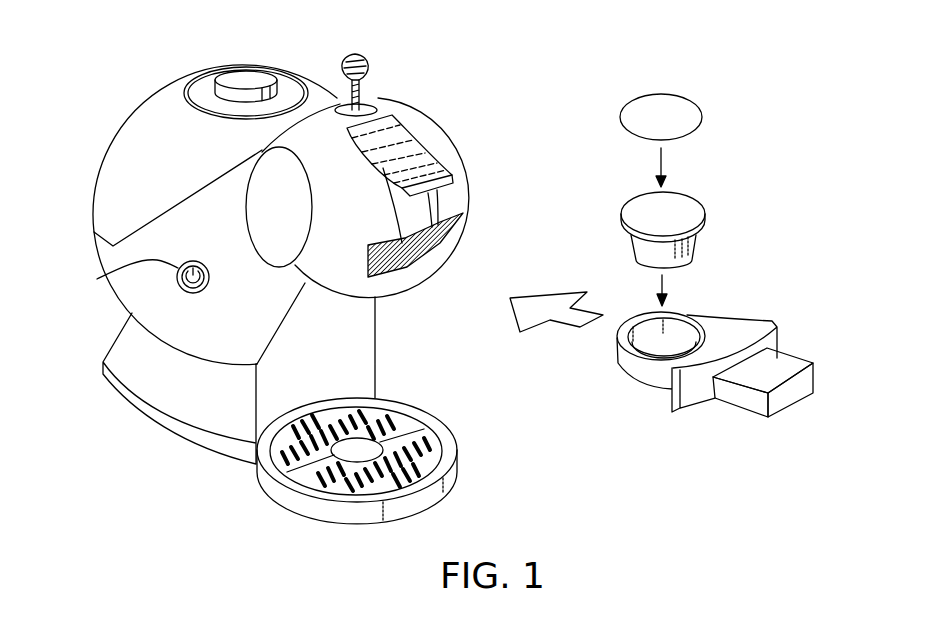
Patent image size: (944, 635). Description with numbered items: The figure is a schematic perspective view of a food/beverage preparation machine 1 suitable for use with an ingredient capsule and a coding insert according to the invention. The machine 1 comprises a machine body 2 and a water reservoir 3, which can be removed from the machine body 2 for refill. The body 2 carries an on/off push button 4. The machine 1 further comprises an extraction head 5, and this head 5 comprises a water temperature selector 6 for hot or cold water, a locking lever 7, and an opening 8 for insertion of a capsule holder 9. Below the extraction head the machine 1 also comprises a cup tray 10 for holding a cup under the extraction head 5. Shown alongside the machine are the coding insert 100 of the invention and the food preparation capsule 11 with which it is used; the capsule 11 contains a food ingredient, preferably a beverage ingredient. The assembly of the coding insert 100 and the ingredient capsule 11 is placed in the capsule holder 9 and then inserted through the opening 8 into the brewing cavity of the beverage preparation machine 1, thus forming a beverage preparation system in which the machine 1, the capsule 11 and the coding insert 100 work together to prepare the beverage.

The beverage preparation machine 1 is at (426, 95).
The machine body 2 is at (133, 292).
The water reservoir 3 is at (113, 162).
The on/off push button 4 is at (97, 279).
The extraction head 5 is at (463, 199).
The water temperature selector 6 is at (349, 54).
The locking lever 7 is at (412, 150).
The opening 8 is at (461, 231).
The capsule holder 9 is at (788, 362).
The cup tray 10 is at (294, 502).
The food preparation capsule 11 is at (673, 206).
The coding insert 100 is at (687, 115).